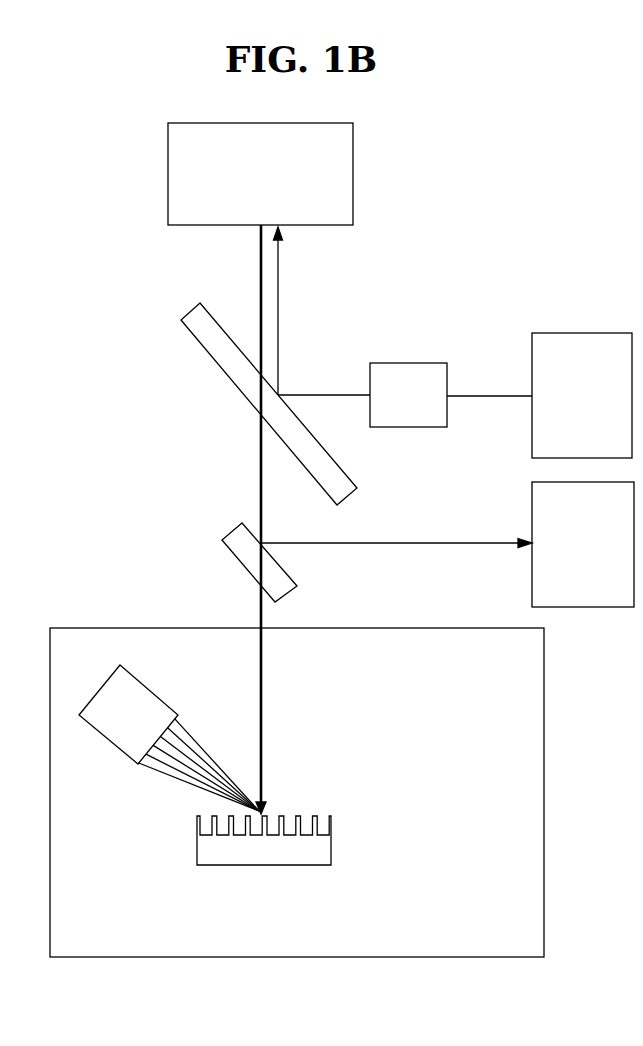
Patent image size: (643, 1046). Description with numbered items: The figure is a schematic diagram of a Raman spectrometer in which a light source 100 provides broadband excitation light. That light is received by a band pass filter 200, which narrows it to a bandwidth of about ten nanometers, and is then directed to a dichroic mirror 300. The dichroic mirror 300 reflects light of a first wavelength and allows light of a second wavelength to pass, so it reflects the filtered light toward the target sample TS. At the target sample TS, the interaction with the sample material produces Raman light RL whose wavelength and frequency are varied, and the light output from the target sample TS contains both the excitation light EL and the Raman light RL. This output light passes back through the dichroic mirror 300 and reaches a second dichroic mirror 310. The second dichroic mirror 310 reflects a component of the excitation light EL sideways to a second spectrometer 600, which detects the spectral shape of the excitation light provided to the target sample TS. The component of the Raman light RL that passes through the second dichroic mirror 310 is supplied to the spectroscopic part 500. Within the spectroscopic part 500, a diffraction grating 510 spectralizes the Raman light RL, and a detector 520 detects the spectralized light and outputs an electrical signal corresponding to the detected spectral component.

The target sample TS is at (260, 174).
The excitation light EL is at (278, 283).
The Raman light RL is at (261, 703).
The light source 100 is at (582, 395).
The band pass filter 200 is at (451, 395).
The dichroic mirror 300 is at (181, 320).
The second dichroic mirror 310 is at (232, 533).
The spectroscopic part 500 is at (297, 792).
The diffraction grating 510 is at (331, 865).
The detector 520 is at (169, 738).
The second spectrometer 600 is at (447, 544).